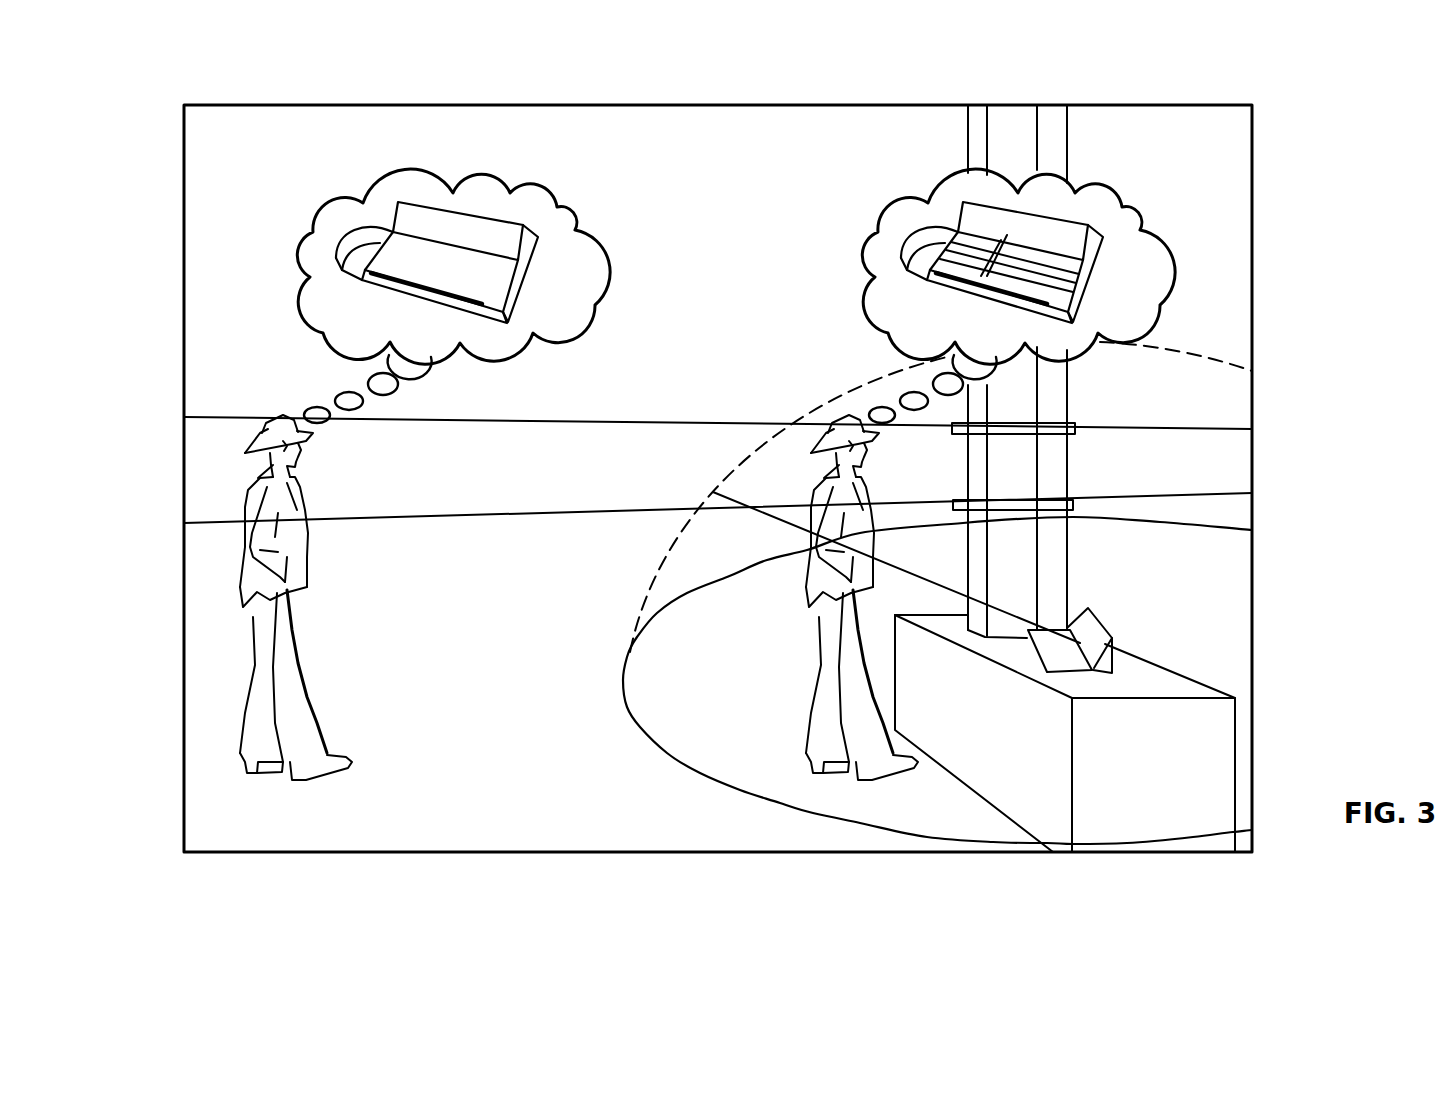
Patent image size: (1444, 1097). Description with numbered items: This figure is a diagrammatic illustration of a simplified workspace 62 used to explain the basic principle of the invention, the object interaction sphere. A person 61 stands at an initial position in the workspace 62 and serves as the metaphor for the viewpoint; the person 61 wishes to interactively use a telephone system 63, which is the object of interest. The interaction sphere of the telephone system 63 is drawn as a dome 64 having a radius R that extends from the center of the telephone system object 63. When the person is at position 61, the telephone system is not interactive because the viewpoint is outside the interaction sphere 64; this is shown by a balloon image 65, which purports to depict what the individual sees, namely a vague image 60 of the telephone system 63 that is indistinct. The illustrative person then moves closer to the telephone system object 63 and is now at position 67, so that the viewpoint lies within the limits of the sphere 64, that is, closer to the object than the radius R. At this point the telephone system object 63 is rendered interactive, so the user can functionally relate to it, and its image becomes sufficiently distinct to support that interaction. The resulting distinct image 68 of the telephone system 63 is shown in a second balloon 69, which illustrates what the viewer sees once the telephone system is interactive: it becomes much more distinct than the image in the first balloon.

The vague image 60 is at (450, 258).
The person 61 is at (265, 500).
The workspace 62 is at (792, 168).
The telephone system 63 is at (1090, 672).
The dome 64 is at (985, 888).
The balloon image 65 is at (400, 188).
The position 67 is at (843, 425).
The distinct image 68 is at (1003, 253).
The balloon 69 is at (940, 195).
The radius R is at (1007, 607).